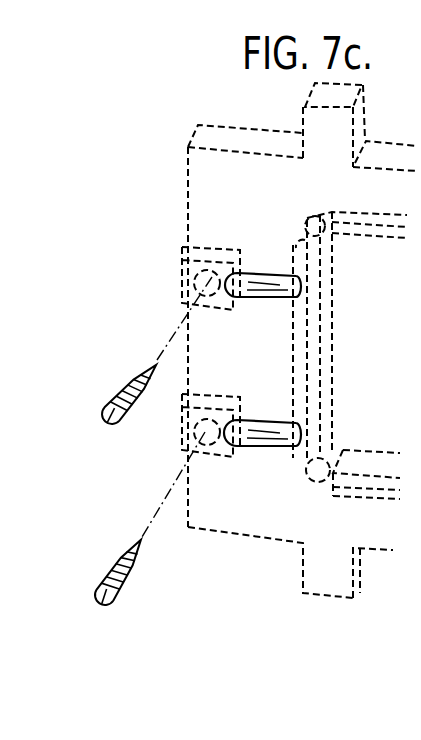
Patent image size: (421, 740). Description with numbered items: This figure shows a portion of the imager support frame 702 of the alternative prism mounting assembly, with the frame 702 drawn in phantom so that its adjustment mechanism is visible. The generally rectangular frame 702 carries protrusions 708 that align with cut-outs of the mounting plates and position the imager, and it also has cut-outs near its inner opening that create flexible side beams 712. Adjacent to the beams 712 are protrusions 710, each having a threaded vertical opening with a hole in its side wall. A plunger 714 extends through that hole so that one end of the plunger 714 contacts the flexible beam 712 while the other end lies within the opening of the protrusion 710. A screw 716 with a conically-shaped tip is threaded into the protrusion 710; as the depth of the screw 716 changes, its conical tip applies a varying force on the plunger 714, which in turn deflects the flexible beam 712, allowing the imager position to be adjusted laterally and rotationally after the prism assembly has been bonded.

The support plate 702 is at (410, 624).
The protrusion 708 is at (303, 572).
The protrusion 710 is at (177, 443).
The flexible side beam 712 is at (333, 332).
The plunger 714 is at (263, 273).
The screw 716 is at (126, 380).